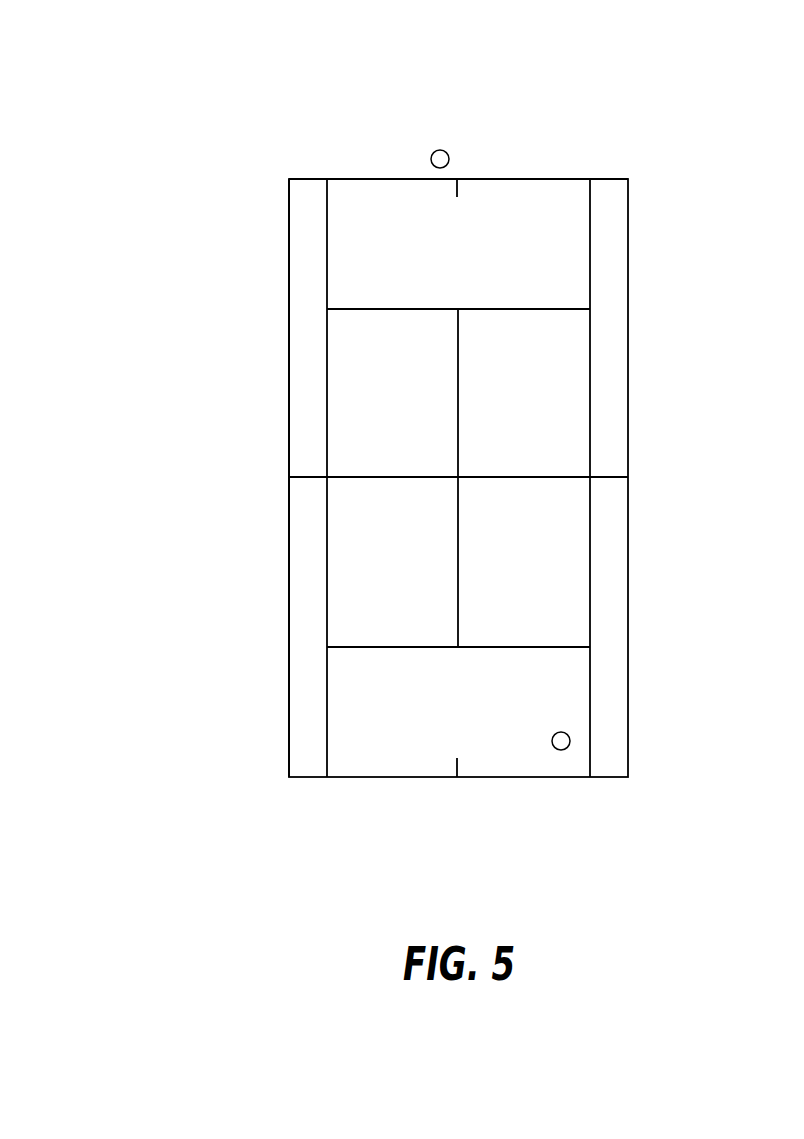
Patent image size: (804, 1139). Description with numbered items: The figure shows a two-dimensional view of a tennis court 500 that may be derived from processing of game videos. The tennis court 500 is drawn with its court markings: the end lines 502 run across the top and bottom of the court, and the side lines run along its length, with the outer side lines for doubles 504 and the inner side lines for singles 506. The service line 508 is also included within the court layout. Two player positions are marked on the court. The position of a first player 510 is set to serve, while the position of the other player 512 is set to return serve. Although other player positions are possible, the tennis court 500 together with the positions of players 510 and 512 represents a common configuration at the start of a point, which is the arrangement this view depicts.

The tennis court 500 is at (114, 34).
The end lines 502 is at (345, 179).
The side lines for doubles 504 is at (288, 440).
The side lines for singles 506 is at (327, 590).
The service line 508 is at (458, 194).
The first player 510 is at (433, 153).
The player 512 is at (568, 734).